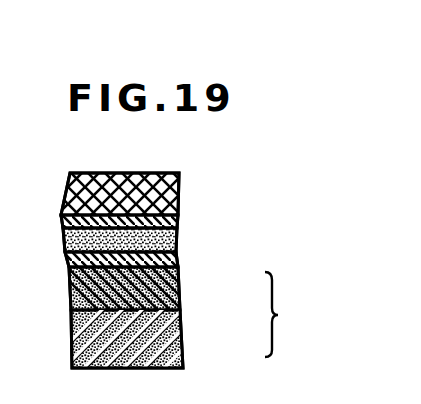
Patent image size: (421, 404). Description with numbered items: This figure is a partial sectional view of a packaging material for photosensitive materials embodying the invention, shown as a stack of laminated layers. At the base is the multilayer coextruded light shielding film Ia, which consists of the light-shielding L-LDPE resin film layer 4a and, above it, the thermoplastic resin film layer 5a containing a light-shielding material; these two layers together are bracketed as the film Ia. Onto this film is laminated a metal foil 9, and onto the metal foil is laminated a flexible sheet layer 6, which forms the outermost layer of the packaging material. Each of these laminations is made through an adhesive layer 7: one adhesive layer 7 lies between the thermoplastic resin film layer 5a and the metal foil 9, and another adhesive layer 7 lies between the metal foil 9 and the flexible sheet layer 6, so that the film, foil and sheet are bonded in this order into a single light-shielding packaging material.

The flexible sheet layer 6 is at (183, 193).
The adhesive layer 7 is at (62, 223).
The metal foil 9 is at (183, 240).
The thermoplastic resin film layer 5a is at (180, 293).
The light-shielding L-LDPE resin film layer 4a is at (180, 337).
The multilayer coextruded light shielding film Ia is at (290, 314).